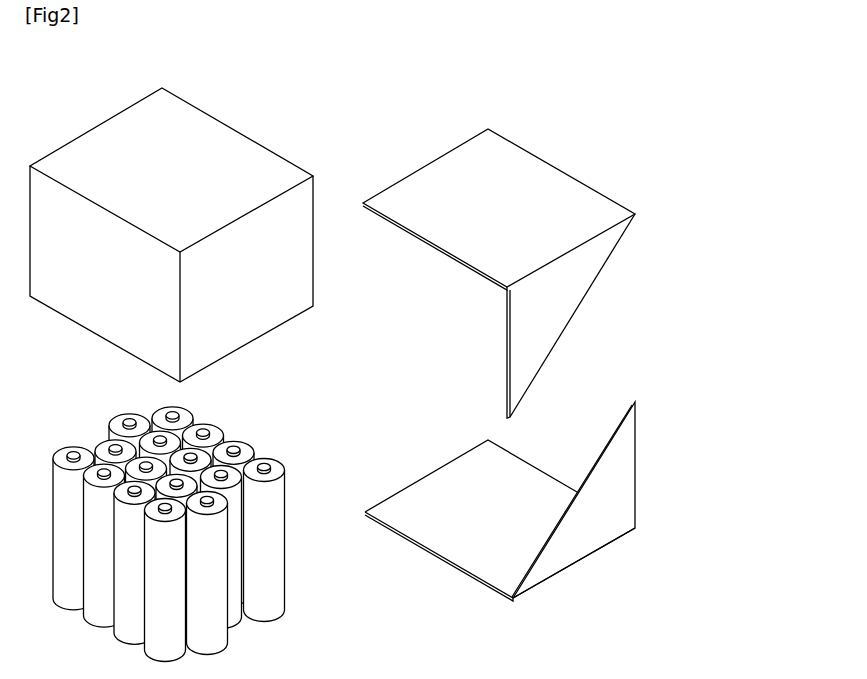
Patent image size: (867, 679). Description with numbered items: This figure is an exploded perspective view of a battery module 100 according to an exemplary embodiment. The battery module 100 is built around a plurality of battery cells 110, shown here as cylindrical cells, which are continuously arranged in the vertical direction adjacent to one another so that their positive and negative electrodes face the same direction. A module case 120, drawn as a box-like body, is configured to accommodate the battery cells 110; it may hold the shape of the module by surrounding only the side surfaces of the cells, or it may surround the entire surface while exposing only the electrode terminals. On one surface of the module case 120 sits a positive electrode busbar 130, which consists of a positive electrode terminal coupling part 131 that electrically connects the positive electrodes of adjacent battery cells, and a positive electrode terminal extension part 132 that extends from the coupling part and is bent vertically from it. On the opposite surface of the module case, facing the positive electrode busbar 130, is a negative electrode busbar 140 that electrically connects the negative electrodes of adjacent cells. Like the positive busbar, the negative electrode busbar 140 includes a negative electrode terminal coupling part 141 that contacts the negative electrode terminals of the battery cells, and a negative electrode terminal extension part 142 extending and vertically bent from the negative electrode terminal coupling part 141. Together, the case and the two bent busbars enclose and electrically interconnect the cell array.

The battery module 100 is at (419, 81).
The battery cells 110 is at (267, 448).
The module case 120 is at (232, 142).
The positive electrode busbar 130 is at (540, 272).
The positive electrode terminal coupling part 131 is at (555, 182).
The positive electrode terminal extension part 132 is at (568, 302).
The negative electrode busbar 140 is at (540, 501).
The negative electrode terminal coupling part 141 is at (457, 552).
The negative electrode terminal extension part 142 is at (585, 545).